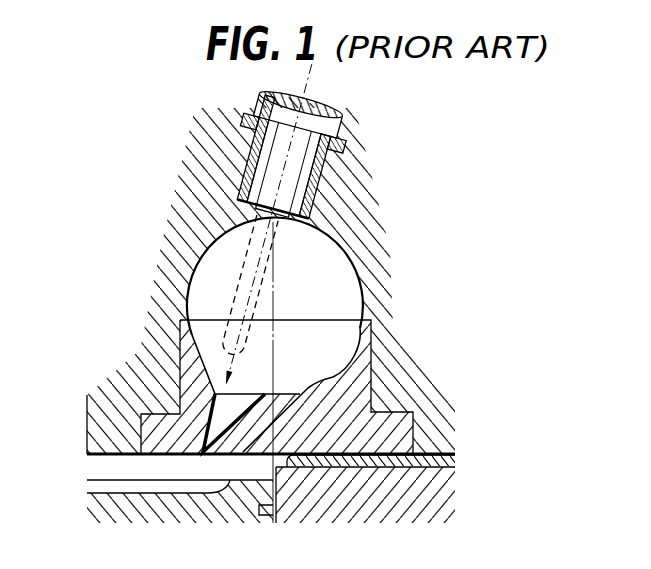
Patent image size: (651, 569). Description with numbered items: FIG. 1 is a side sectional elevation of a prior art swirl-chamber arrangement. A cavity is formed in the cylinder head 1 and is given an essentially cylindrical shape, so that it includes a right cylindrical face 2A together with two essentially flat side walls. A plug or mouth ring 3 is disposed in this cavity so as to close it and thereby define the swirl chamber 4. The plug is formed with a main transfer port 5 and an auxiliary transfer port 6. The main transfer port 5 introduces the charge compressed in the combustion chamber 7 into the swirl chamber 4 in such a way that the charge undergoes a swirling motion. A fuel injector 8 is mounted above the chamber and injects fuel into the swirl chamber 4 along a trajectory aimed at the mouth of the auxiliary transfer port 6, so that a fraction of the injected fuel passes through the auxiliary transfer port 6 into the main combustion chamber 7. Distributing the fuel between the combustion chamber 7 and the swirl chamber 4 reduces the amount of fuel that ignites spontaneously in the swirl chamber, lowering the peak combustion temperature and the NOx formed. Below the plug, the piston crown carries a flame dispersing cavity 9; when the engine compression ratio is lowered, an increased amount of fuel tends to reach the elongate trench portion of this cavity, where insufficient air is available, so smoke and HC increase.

The cylinder head 1 is at (178, 253).
The right cylindrical face 2A is at (349, 273).
The plug or mouth ring 3 is at (186, 356).
The swirl chamber 4 is at (302, 294).
The main transfer port 5 is at (288, 407).
The auxiliary transfer port 6 is at (213, 405).
The combustion chamber 7 is at (97, 465).
The fuel injector 8 is at (275, 150).
The flame dispersing cavity 9 is at (93, 484).